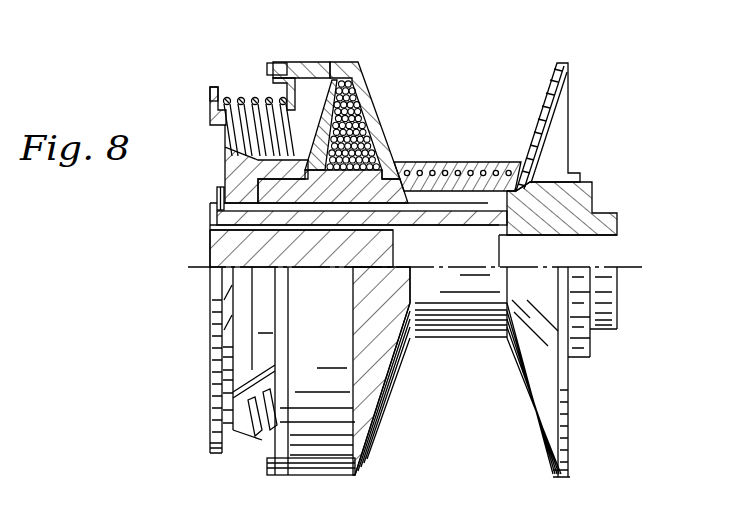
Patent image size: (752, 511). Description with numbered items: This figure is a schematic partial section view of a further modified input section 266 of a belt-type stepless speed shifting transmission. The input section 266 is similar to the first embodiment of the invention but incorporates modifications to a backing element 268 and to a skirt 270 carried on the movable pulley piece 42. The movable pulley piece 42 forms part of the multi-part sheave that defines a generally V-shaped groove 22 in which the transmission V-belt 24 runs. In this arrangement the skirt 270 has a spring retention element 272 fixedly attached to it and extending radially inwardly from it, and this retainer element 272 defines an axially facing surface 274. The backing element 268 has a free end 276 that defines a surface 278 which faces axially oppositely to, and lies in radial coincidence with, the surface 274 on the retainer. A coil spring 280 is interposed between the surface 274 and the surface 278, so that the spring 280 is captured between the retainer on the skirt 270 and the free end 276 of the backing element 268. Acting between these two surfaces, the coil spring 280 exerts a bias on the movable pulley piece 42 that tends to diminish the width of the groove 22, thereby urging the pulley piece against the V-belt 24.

The V-shaped groove 22 is at (418, 120).
The transmission V-belt 24 is at (457, 168).
The movable pulley piece 42 is at (360, 78).
The input section 266 is at (613, 199).
The backing element 268 is at (237, 168).
The skirt 270 is at (323, 64).
The spring retention element 272 is at (273, 90).
The axially facing surface 274 is at (273, 84).
The free end 276 is at (210, 88).
The surface 278 is at (226, 92).
The coil spring 280 is at (258, 130).